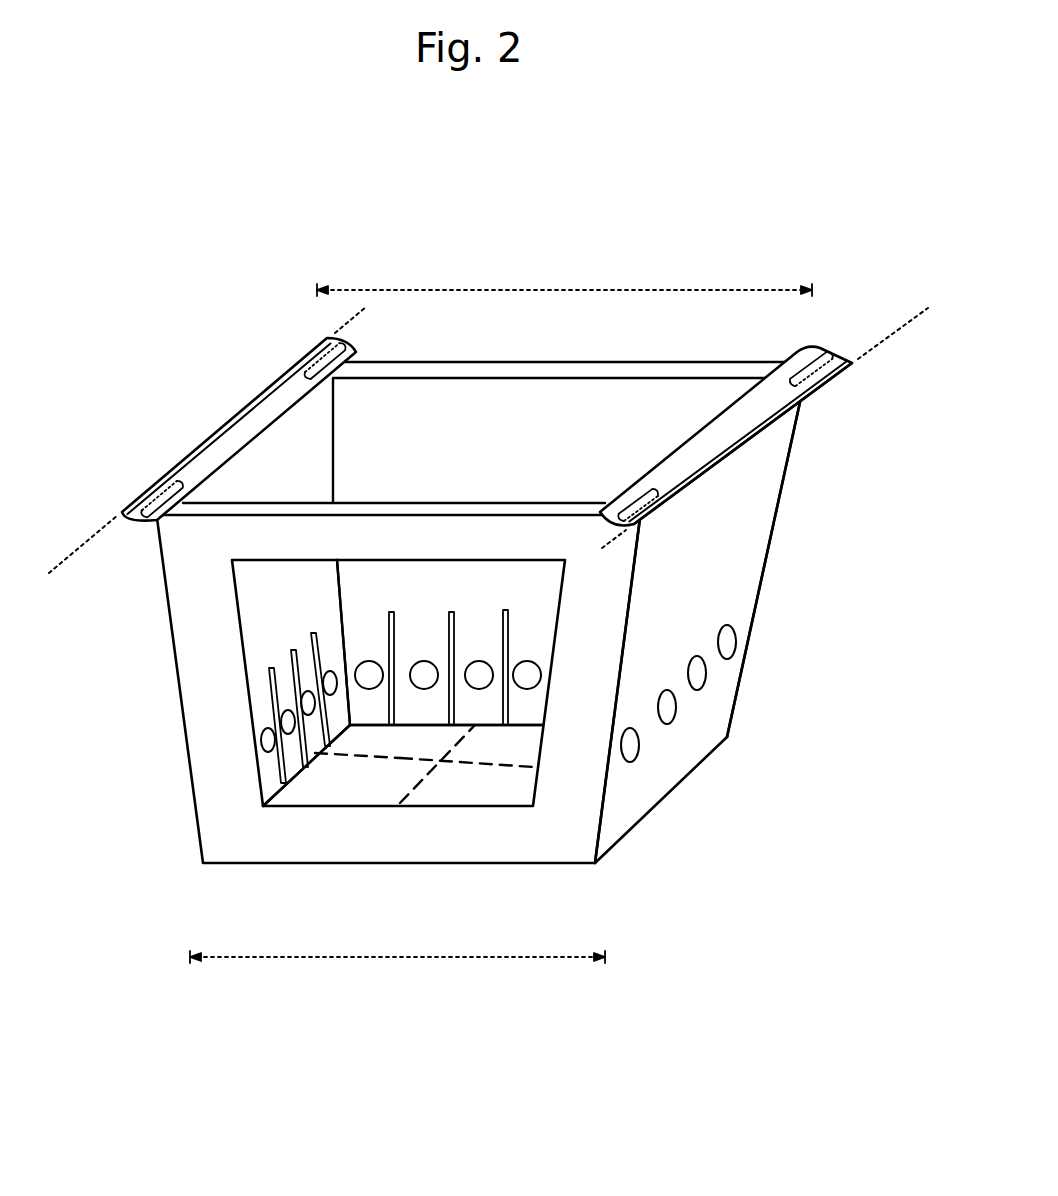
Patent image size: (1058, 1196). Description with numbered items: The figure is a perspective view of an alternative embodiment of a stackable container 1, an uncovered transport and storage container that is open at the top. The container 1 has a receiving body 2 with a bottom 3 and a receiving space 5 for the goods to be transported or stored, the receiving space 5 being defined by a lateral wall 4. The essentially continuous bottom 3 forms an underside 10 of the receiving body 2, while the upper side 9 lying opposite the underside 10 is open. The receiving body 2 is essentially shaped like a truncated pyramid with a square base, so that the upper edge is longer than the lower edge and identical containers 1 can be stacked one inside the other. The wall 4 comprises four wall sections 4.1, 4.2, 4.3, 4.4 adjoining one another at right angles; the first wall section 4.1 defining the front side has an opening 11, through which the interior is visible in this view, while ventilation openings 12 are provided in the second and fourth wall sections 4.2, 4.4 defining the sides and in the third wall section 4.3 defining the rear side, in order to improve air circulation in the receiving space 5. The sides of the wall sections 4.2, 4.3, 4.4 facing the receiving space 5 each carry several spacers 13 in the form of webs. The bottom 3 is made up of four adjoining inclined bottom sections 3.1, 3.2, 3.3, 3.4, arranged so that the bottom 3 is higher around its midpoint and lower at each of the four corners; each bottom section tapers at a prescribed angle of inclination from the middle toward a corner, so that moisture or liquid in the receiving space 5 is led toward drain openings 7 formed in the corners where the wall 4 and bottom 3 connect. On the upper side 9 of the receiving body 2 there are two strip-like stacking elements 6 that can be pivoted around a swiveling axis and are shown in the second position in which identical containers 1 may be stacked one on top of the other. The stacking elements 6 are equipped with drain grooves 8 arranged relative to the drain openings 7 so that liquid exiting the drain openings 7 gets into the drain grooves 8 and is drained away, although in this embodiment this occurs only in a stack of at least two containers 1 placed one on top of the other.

The stackable container 1 is at (150, 247).
The receiving body 2 is at (187, 588).
The bottom 3 is at (331, 792).
The bottom section 3.1 is at (352, 786).
The bottom section 3.2 is at (462, 782).
The bottom section 3.3 is at (505, 752).
The bottom section 3.4 is at (387, 732).
The lateral wall 4 is at (738, 518).
The first wall section 4.1 is at (190, 623).
The second wall section 4.2 is at (745, 582).
The third wall section 4.3 is at (405, 419).
The fourth wall section 4.4 is at (303, 432).
The receiving space 5 is at (510, 452).
The stacking element 6 is at (257, 418).
The drain opening 7 is at (352, 727).
The drain groove 8 is at (343, 347).
The upper side 9 is at (841, 378).
The underside 10 is at (681, 803).
The opening 11 is at (243, 637).
The ventilation opening 12 is at (260, 737).
The spacer 13 is at (265, 678).